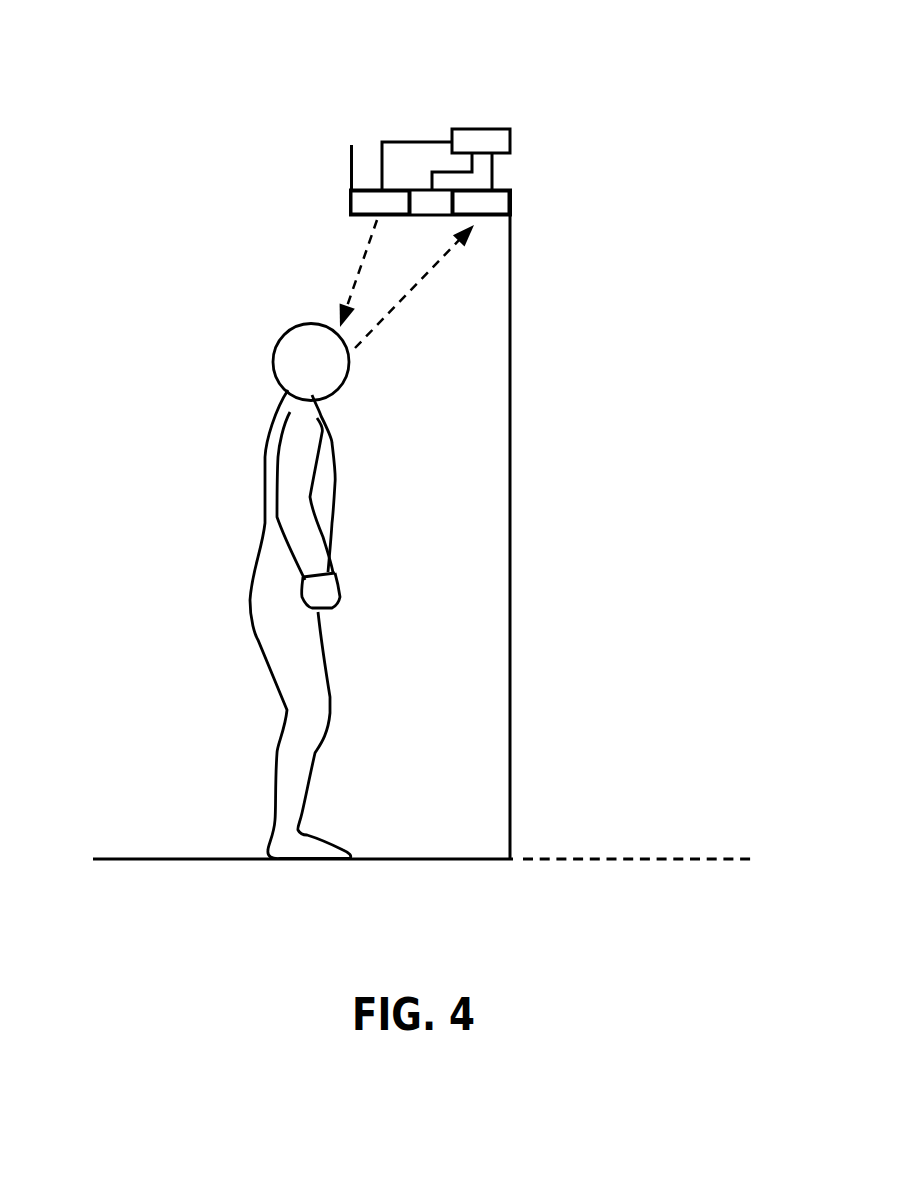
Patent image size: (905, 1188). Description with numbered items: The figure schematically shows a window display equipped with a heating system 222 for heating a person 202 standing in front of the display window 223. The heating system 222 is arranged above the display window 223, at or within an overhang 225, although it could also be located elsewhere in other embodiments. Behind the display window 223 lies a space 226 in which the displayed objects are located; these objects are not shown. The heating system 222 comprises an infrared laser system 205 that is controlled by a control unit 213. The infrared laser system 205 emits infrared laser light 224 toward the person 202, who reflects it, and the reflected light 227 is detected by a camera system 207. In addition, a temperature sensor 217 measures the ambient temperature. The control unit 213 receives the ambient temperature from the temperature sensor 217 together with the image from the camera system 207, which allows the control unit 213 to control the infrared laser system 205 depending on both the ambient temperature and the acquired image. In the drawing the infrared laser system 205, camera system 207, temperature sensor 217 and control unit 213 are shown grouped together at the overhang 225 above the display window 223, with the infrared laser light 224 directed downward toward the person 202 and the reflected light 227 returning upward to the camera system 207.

The person 202 is at (172, 597).
The infrared laser system 205 is at (372, 190).
The camera system 207 is at (503, 190).
The control unit 213 is at (498, 128).
The temperature sensor 217 is at (423, 190).
The heating system 222 is at (387, 120).
The display window 223 is at (508, 502).
The infrared laser light 224 is at (357, 272).
The overhang 225 is at (320, 198).
The space 226 is at (630, 520).
The reflected light 227 is at (425, 277).